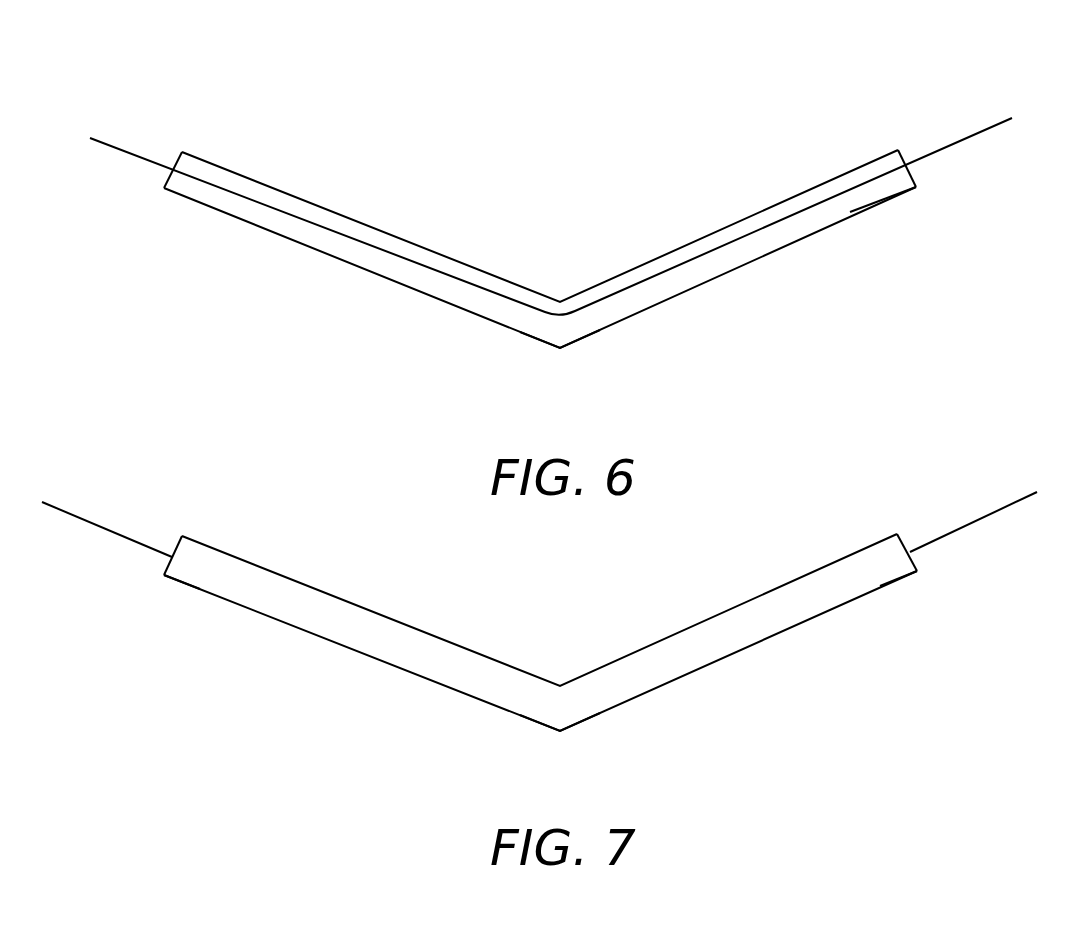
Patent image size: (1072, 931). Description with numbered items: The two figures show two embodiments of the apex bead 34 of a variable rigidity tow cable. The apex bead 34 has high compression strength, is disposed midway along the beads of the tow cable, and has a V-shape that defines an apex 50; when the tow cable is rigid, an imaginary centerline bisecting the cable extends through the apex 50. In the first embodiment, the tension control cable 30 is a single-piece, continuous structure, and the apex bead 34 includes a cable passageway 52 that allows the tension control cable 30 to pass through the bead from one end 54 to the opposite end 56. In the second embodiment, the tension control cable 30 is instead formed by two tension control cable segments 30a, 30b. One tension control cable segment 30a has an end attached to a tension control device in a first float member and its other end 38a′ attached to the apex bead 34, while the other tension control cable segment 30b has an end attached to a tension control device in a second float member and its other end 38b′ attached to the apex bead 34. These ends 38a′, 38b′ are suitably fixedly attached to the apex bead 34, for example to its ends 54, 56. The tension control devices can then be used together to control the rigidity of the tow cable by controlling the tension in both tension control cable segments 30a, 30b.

In FIG. 6, the tension control cable 30 is at (977, 137).
In FIG. 7, the tension control cable segment 30a is at (82, 516).
In FIG. 7, the tension control cable segment 30b is at (1013, 500).
In FIG. 6, the apex bead 34 is at (738, 266).
In FIG. 7, the apex bead 34 is at (372, 608).
In FIG. 7, the end of tension control cable segment 38a′ is at (172, 556).
In FIG. 7, the end of tension control cable segment 38b′ is at (910, 552).
In FIG. 6, the apex 50 is at (560, 350).
In FIG. 7, the apex 50 is at (560, 733).
In FIG. 6, the cable passageway 52 is at (885, 188).
In FIG. 6, the end of apex bead 54 is at (163, 187).
In FIG. 7, the end of apex bead 54 is at (163, 575).
In FIG. 6, the end of apex bead 56 is at (903, 154).
In FIG. 7, the end of apex bead 56 is at (905, 545).